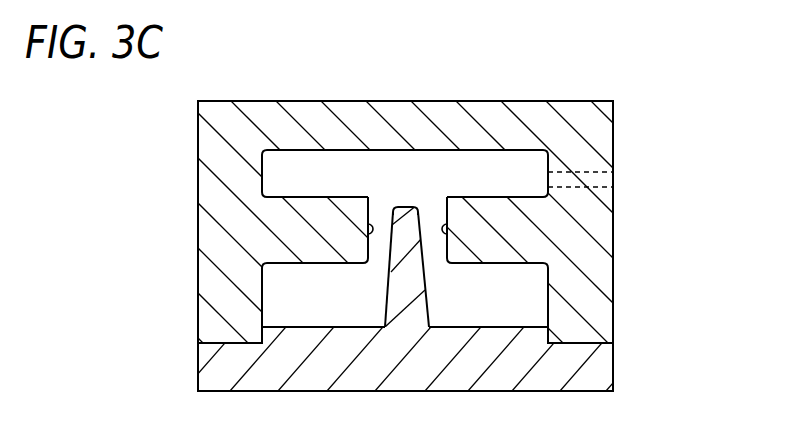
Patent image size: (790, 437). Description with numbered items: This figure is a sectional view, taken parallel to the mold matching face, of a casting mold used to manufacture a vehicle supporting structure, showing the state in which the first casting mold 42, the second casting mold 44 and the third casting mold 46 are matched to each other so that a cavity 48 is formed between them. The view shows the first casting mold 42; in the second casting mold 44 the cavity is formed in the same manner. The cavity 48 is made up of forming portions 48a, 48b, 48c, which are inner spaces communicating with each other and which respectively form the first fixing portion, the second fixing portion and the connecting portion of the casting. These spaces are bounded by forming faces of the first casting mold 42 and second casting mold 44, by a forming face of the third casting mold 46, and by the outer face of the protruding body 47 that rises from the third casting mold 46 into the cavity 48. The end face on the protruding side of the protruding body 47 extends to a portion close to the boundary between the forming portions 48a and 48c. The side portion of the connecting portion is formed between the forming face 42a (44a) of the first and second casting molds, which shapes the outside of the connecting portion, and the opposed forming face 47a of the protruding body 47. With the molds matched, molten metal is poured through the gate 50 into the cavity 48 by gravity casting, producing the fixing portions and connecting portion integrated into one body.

The first casting mold 42 is at (395, 221).
The second casting mold 44 is at (545, 101).
The forming face 42a is at (407, 238).
The forming face 44a is at (368, 237).
The third casting mold 46 is at (600, 367).
The protruding body 47 is at (525, 191).
The forming face 47a is at (427, 213).
The cavity 48 is at (400, 191).
The forming portion 48a is at (320, 168).
The forming portion 48b is at (293, 298).
The forming portion 48c is at (385, 217).
The gate 50 is at (613, 177).